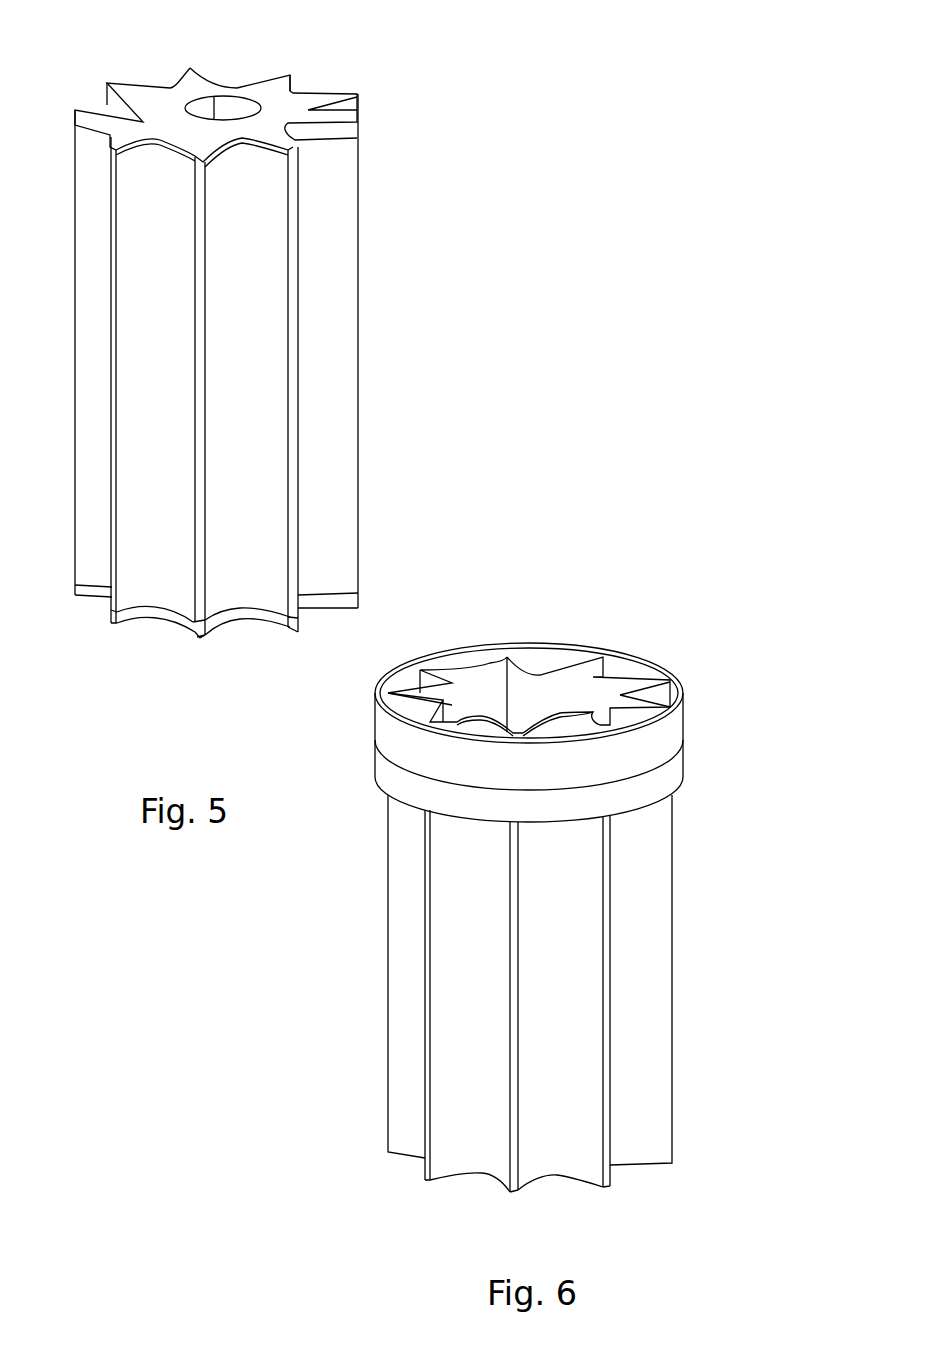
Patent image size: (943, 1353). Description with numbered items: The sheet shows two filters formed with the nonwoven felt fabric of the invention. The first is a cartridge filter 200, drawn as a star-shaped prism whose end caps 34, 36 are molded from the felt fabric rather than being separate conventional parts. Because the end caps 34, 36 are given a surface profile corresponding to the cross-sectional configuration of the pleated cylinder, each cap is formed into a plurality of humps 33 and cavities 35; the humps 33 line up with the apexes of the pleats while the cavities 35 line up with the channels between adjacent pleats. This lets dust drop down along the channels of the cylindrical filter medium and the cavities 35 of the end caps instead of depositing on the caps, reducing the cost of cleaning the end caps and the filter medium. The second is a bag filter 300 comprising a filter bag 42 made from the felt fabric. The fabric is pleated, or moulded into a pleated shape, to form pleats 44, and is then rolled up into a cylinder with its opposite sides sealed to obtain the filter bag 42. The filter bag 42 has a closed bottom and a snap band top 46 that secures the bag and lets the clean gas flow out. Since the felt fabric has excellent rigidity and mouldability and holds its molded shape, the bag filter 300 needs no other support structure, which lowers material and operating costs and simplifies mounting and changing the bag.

In FIG. 5, the cartridge filter 200 is at (392, 295).
In FIG. 5, the end cap 34 is at (243, 100).
In FIG. 5, the hump 33 is at (197, 637).
In FIG. 5, the cavity 35 is at (237, 622).
In FIG. 5, the end cap 36 is at (142, 615).
In FIG. 6, the bag filter 300 is at (693, 913).
In FIG. 6, the snap band top 46 is at (655, 732).
In FIG. 6, the pleats 44 is at (607, 1013).
In FIG. 6, the filter bag 42 is at (672, 1073).